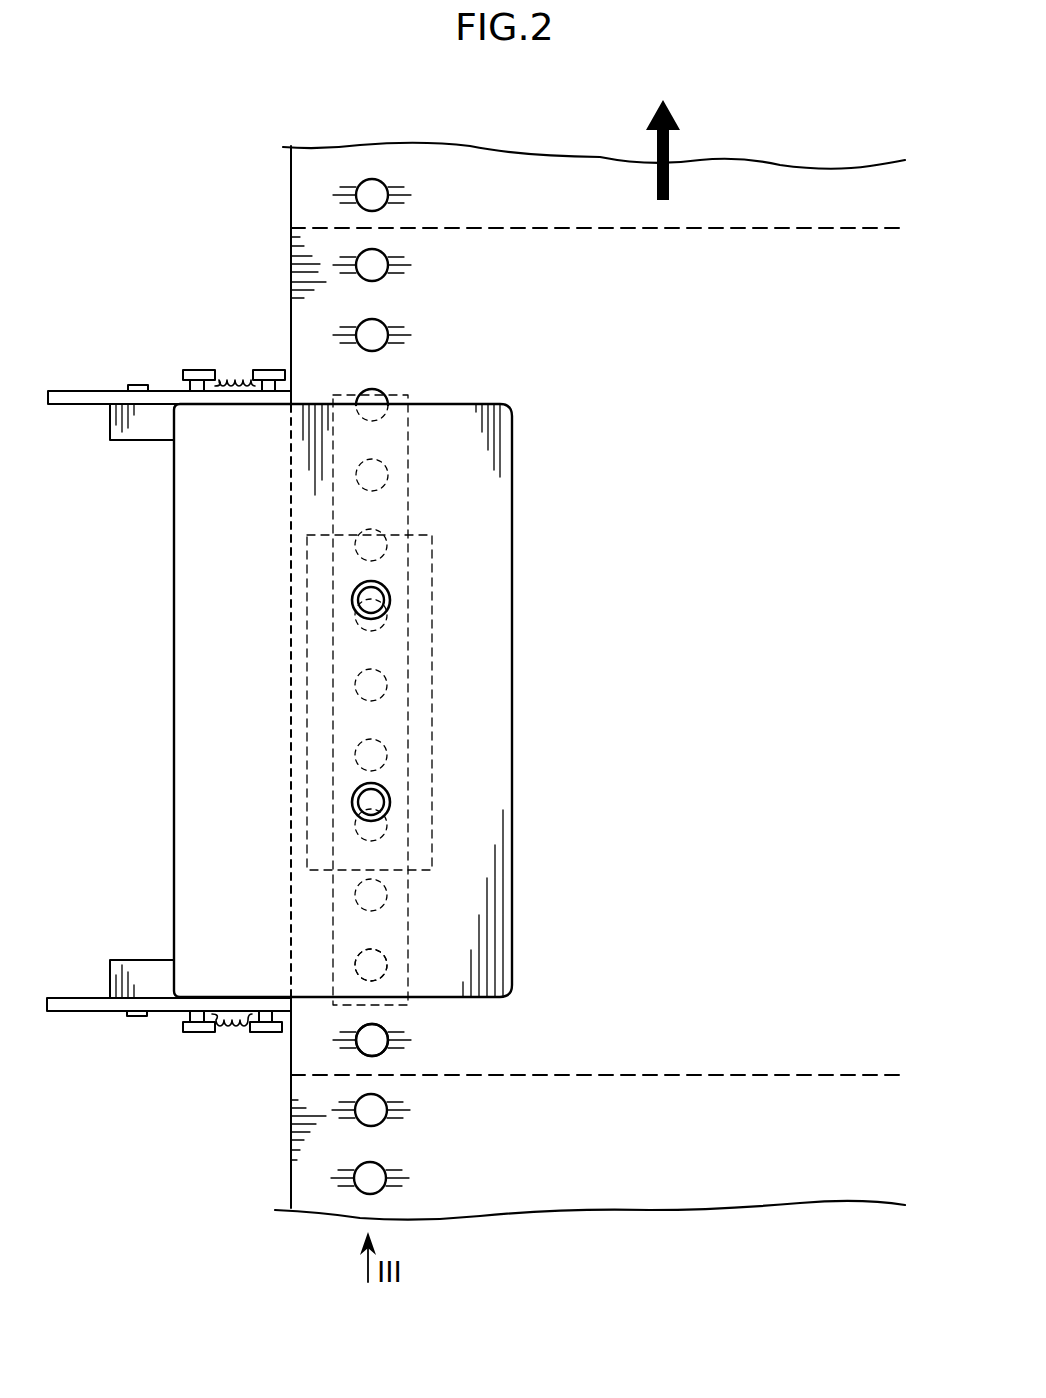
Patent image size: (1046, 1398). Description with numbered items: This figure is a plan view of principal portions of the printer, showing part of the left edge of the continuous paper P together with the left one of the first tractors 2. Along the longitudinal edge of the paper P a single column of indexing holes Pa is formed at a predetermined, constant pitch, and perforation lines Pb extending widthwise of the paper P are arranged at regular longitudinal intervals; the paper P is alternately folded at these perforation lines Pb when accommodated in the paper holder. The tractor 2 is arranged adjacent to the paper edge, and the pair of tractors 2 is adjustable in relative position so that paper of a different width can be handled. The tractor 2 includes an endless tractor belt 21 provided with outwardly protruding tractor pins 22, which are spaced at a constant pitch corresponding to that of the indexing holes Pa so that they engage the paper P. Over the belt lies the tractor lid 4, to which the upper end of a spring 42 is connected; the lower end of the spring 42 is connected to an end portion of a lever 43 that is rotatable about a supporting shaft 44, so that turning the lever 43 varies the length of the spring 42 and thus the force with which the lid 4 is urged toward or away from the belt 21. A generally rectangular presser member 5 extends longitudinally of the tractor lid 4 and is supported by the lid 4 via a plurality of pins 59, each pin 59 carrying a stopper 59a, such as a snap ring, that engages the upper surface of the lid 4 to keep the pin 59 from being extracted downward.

The continuous paper P is at (302, 187).
The indexing holes Pa is at (378, 260).
The perforation lines Pb is at (735, 229).
The first tractor 2 is at (522, 647).
The tractor lid 4 is at (497, 568).
The presser member 5 is at (428, 720).
The tractor belt 21 is at (412, 474).
The tractor pins 22 is at (385, 968).
The spring 42 is at (235, 378).
The lever 43 is at (80, 392).
The supporting shaft 44 is at (142, 385).
The pins 59 is at (376, 596).
The stopper 59a is at (390, 602).